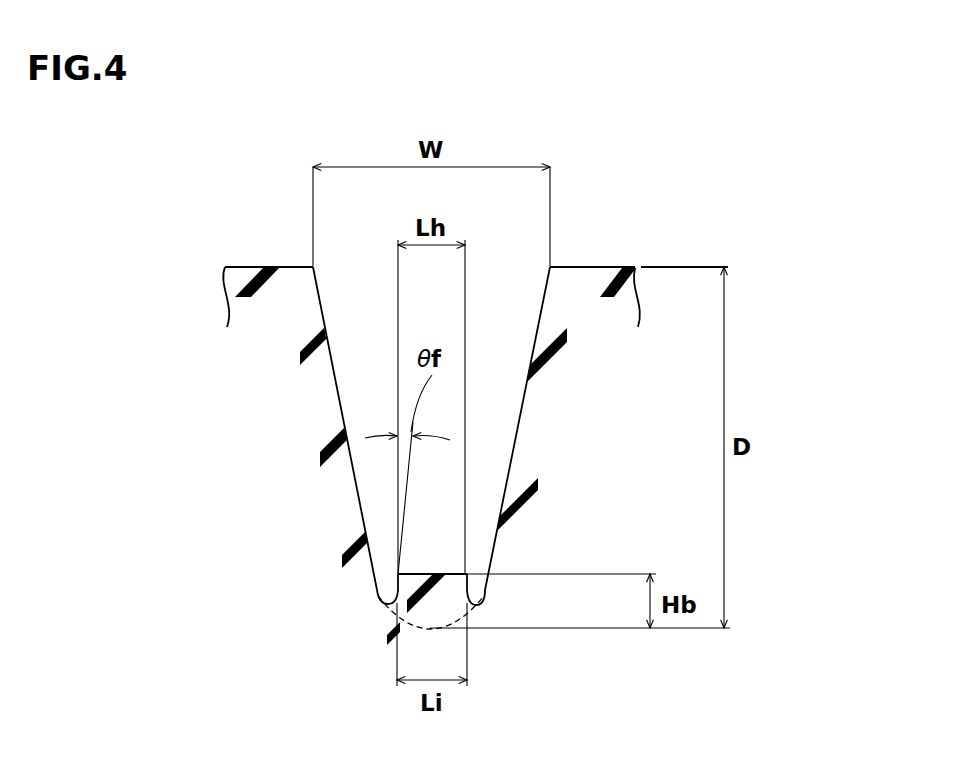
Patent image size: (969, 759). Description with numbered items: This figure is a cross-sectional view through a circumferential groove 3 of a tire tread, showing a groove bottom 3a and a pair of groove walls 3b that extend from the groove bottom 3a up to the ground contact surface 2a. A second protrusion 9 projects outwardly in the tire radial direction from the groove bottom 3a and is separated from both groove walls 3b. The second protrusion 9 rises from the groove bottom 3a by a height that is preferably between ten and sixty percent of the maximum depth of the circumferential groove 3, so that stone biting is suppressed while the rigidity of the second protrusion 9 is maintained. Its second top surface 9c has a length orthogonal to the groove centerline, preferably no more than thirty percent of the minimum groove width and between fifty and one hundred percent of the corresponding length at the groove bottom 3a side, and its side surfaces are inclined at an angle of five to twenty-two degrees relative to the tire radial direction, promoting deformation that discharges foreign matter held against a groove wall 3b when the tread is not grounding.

The ground contact surface 2a is at (243, 267).
The circumferential groove 3 is at (417, 410).
The groove bottom 3a is at (430, 624).
The groove walls 3b is at (333, 357).
The second protrusion 9 is at (489, 559).
The second top surface 9c is at (431, 572).